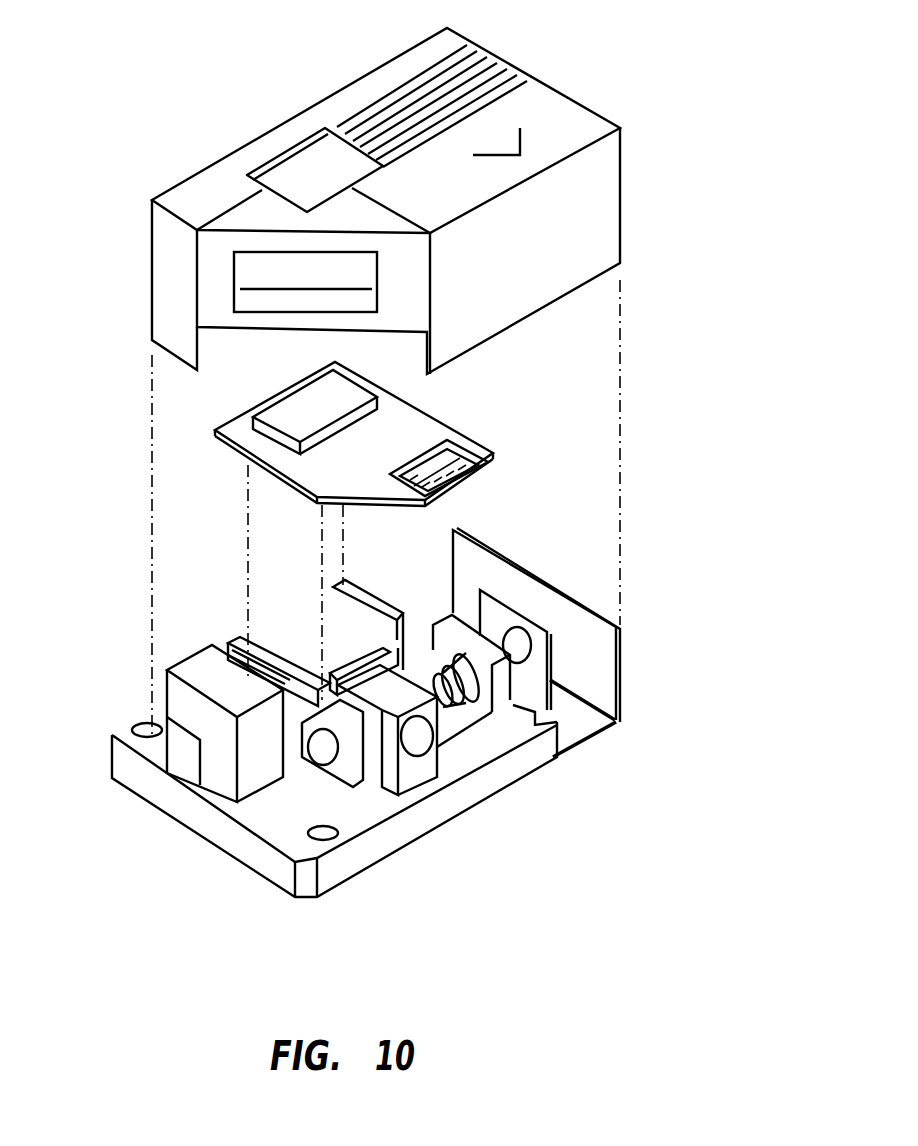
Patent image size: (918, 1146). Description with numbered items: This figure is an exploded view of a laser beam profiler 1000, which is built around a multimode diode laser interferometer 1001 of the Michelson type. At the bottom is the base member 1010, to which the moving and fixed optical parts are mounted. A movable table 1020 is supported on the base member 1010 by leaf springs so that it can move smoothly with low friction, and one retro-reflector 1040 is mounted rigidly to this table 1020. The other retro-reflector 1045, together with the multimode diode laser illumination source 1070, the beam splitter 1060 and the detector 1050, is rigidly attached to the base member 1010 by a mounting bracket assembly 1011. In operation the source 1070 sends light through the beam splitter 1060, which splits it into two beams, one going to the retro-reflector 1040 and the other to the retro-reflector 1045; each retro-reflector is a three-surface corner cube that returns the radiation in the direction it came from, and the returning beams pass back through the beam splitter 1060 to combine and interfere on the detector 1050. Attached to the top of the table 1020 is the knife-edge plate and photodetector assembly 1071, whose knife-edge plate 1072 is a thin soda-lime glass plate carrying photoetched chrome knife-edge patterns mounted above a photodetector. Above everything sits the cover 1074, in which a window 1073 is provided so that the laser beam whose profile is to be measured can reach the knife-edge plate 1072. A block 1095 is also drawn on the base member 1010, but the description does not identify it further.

The laser beam profiler 1000 is at (650, 184).
The window 1073 is at (307, 170).
The cover 1074 is at (478, 328).
The knife-edge plate and photodetector assembly 1071 is at (470, 473).
The knife-edge plate 1072 is at (300, 392).
The movable table 1020 is at (380, 622).
The mounting bracket assembly 1011 is at (503, 710).
The multimode diode laser illumination source 1070 is at (475, 683).
The detector 1050 is at (335, 628).
The beam splitter 1060 is at (325, 670).
The retro-reflector 1045 is at (413, 720).
The retro-reflector 1040 is at (320, 745).
The block 1095 is at (193, 710).
The base member 1010 is at (177, 820).
The multimode diode laser interferometer 1001 is at (458, 783).